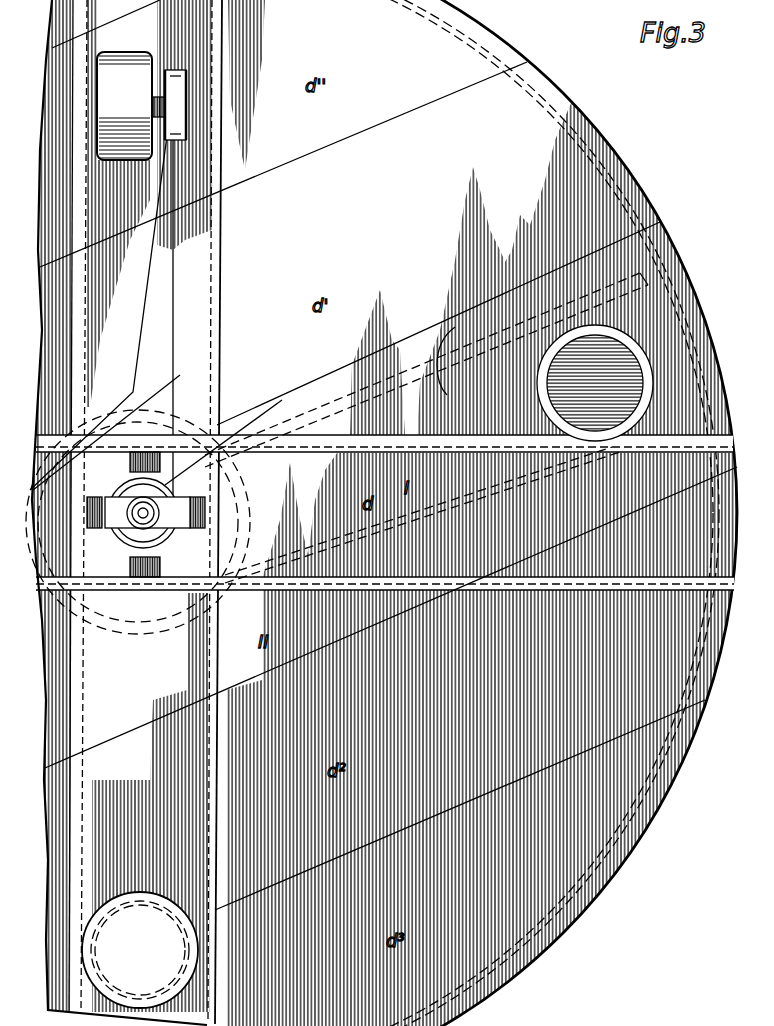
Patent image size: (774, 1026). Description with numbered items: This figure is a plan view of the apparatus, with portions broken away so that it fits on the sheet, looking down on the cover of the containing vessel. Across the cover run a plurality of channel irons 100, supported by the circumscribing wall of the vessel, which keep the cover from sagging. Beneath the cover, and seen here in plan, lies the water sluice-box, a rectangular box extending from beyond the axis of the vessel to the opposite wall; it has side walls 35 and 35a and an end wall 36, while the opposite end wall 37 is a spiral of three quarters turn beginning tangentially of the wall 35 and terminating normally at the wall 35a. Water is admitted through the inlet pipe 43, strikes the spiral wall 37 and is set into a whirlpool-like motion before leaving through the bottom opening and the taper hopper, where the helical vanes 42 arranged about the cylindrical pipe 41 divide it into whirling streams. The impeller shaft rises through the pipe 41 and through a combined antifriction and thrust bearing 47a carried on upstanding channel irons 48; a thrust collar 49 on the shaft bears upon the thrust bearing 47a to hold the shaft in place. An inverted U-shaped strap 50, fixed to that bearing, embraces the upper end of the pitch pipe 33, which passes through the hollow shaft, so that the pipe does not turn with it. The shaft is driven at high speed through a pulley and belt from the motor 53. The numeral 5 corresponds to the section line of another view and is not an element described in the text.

The belt 5 is at (148, 317).
The pitch pipe 33 is at (138, 530).
The side wall 35 is at (593, 432).
The side wall 35a is at (426, 370).
The end wall 36 is at (205, 510).
The end wall 37 is at (130, 620).
The cylindrical pipe 41 is at (145, 566).
The helical vanes 42 is at (145, 461).
The inlet pipe 43 is at (557, 380).
The thrust bearing 47a is at (438, 323).
The channel irons 48 is at (88, 512).
The thrust collar 49 is at (223, 442).
The inverted U-shaped strap 50 is at (159, 513).
The motor 53 is at (141, 106).
The channel irons 100 is at (207, 802).